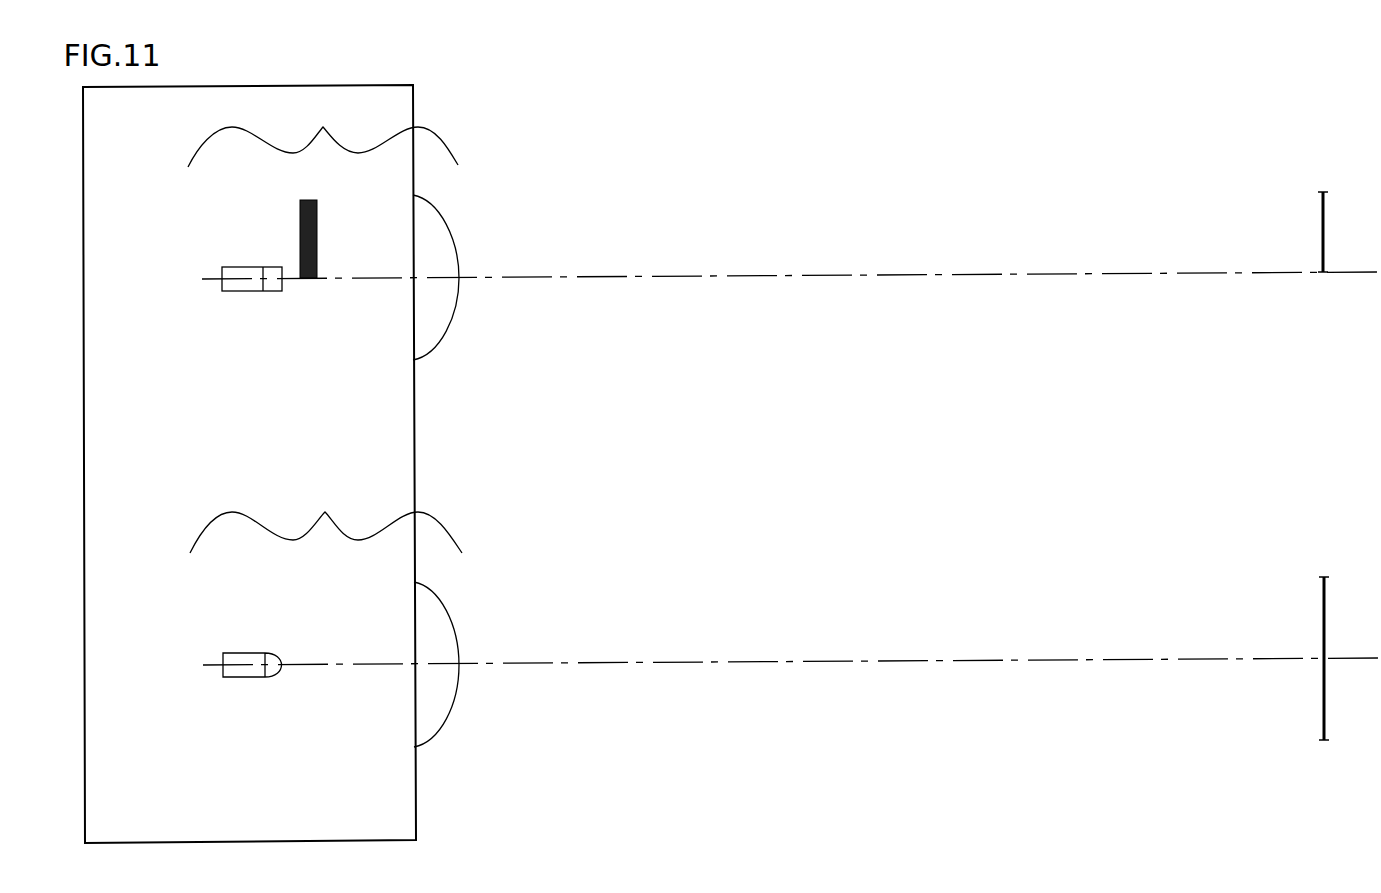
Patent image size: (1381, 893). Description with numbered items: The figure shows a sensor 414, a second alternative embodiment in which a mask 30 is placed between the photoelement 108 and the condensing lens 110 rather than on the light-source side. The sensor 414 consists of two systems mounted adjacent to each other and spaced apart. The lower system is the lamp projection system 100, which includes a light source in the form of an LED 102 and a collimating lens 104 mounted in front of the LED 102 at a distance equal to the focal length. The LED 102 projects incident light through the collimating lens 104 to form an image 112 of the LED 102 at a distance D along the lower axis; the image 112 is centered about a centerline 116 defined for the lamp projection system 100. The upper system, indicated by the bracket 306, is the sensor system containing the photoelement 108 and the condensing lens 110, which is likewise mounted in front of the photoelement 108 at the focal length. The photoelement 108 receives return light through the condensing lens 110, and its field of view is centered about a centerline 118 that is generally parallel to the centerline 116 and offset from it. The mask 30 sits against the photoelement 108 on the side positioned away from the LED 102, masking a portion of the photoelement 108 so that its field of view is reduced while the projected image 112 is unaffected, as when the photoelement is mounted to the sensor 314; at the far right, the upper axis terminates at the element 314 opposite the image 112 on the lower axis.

The sensor 414 is at (110, 203).
The second light source assembly 306 is at (323, 132).
The mask 30 is at (305, 200).
The photoelement 108 is at (270, 267).
The condensing lens 110 is at (416, 196).
The centerline 118 is at (587, 277).
The sensor 314 is at (1321, 238).
The lamp projection system 100 is at (326, 519).
The LED 102 is at (270, 652).
The collimating lens 104 is at (415, 583).
The centerline 116 is at (597, 662).
The image 112 is at (1322, 717).